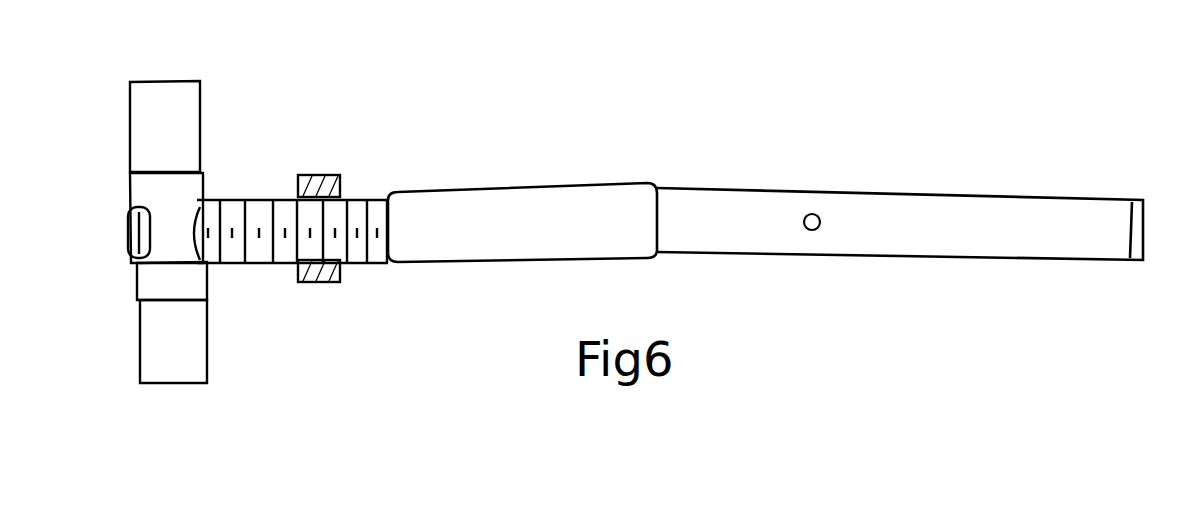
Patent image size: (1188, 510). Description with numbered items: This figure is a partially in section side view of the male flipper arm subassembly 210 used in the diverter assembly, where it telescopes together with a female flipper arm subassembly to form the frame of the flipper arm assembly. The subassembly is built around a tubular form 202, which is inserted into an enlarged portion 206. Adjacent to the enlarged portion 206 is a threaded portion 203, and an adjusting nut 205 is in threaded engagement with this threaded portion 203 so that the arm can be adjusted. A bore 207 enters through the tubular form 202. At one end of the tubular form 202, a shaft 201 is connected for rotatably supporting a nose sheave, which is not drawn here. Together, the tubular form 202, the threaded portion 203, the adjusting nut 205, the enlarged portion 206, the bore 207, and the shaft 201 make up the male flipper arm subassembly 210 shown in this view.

The shaft 201 is at (183, 95).
The tubular form 202 is at (717, 200).
The threaded portion 203 is at (237, 217).
The adjusting nut 205 is at (422, 40).
The enlarged portion 206 is at (442, 217).
The bore 207 is at (818, 216).
The male flipper arm subassembly 210 is at (672, 122).